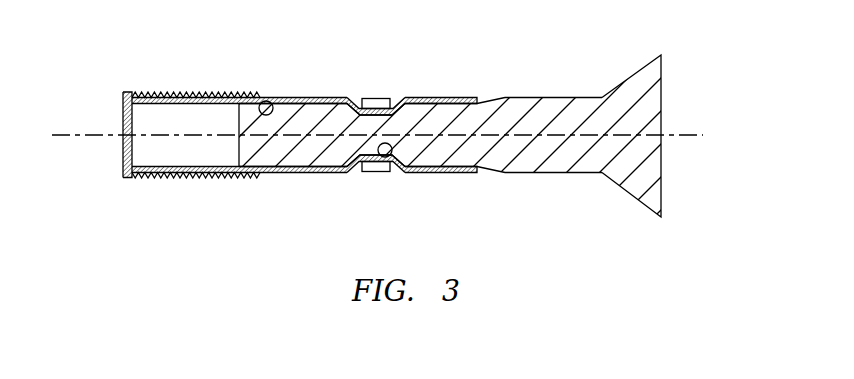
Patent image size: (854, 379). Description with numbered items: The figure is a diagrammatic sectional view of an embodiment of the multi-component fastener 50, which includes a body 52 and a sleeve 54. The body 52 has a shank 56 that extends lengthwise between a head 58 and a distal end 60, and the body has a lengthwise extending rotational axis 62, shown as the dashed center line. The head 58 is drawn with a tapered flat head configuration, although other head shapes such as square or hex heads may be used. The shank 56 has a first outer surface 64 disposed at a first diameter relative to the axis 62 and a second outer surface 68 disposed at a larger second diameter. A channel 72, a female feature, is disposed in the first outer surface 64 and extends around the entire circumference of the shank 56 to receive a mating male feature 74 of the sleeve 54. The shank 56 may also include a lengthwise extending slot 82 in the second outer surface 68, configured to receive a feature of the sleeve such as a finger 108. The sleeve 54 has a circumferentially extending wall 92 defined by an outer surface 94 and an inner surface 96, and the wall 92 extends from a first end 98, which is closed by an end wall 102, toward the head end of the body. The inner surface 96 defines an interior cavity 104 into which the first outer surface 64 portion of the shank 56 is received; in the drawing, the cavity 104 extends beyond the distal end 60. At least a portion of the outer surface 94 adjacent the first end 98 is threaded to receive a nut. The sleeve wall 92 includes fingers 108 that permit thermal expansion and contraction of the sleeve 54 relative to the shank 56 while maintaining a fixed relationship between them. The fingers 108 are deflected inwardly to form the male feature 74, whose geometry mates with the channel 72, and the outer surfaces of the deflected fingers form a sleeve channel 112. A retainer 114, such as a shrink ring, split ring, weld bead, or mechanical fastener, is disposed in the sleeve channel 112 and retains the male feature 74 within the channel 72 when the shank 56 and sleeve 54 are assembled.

The multi-component fastener 50 is at (168, 208).
The body 52 is at (471, 140).
The sleeve 54 is at (272, 135).
The shank 56 is at (512, 153).
The head 58 is at (652, 107).
The distal end 60 is at (239, 135).
The rotational axis 62 is at (73, 130).
The first outer surface 64 is at (312, 97).
The second outer surface 68 is at (547, 97).
The channel 72 is at (391, 157).
The male feature 74 is at (372, 172).
The slot 82 is at (490, 101).
The wall 92 is at (268, 173).
The outer surface 94 is at (287, 172).
The inner surface 96 is at (263, 102).
The first end 98 is at (123, 147).
The end wall 102 is at (123, 118).
The interior cavity 104 is at (203, 128).
The finger 108 is at (463, 97).
The sleeve channel 112 is at (400, 103).
The retainer 114 is at (370, 98).